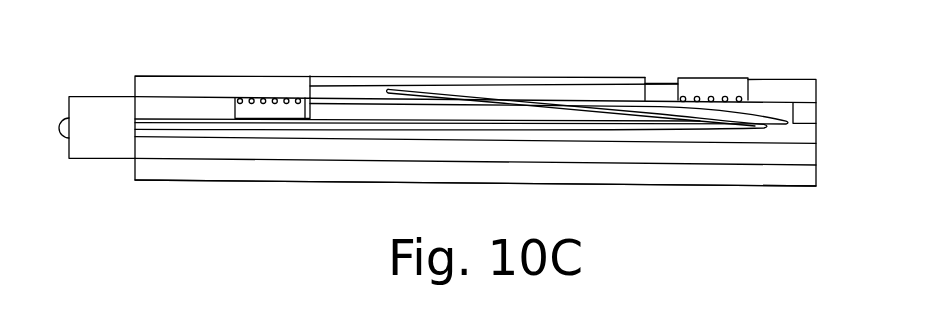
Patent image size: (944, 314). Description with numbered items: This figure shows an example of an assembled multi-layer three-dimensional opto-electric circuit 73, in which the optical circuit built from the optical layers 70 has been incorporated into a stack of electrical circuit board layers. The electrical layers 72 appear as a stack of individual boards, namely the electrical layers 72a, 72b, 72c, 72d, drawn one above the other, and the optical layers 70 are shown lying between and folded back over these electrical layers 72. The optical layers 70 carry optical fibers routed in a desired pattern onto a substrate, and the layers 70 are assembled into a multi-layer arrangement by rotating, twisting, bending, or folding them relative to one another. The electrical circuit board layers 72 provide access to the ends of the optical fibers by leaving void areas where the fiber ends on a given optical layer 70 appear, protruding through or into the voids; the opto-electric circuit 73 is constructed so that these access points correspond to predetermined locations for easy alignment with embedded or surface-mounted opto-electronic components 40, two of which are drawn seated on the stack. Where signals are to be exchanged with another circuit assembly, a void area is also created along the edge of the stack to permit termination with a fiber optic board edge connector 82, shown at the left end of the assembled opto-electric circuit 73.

The opto-electronic components 40 is at (273, 76).
The optical layers 70 is at (398, 112).
The electrical layers 72 is at (165, 90).
The electrical layer 72a is at (816, 160).
The electrical layer 72b is at (816, 138).
The electrical layer 72c is at (816, 113).
The electrical layer 72d is at (816, 90).
The multi-layer three-dimensional opto-electric circuit 73 is at (113, 212).
The fiber optic board edge connectors 82 is at (78, 93).